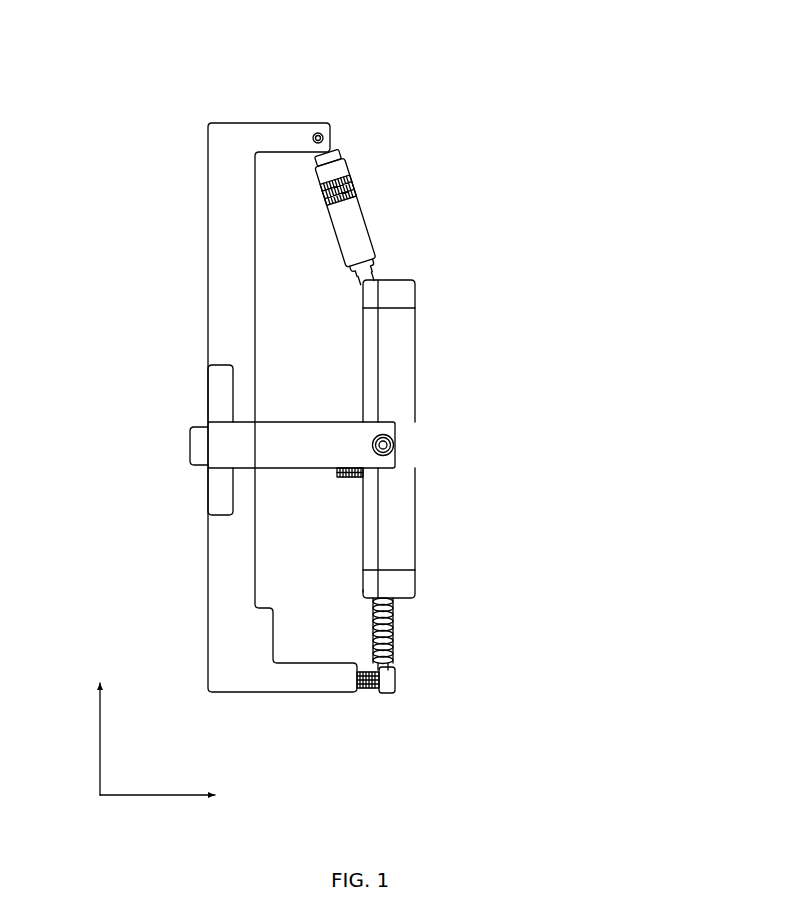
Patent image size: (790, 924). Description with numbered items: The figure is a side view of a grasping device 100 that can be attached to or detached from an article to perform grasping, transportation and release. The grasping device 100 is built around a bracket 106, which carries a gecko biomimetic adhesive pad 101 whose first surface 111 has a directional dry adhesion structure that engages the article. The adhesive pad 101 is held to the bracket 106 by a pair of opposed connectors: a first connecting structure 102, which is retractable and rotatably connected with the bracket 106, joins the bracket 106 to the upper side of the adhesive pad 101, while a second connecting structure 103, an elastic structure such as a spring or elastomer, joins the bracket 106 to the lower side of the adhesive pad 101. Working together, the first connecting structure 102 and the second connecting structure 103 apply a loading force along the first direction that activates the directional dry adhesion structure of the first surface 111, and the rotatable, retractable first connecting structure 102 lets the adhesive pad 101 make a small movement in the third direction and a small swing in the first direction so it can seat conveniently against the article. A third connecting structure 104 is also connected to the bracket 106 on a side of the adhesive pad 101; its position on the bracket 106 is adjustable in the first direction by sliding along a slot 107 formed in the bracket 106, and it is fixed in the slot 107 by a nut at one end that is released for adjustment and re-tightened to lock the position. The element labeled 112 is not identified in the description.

The grasping device 100 is at (170, 98).
The gecko biomimetic adhesive pad 101 is at (396, 380).
The first connecting structure 102 is at (353, 238).
The second connecting structure 103 is at (387, 633).
The third connecting structure 104 is at (318, 452).
The bracket 106 is at (228, 303).
The slot 107 is at (222, 505).
The first surface 111 is at (420, 547).
The guide surface 112 is at (357, 542).